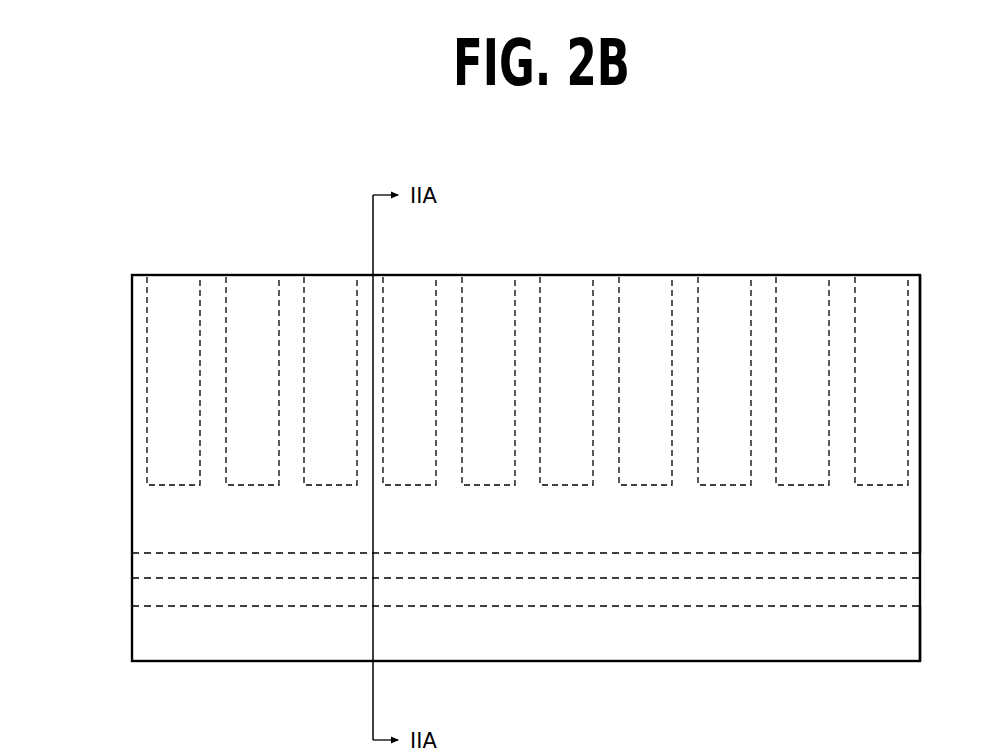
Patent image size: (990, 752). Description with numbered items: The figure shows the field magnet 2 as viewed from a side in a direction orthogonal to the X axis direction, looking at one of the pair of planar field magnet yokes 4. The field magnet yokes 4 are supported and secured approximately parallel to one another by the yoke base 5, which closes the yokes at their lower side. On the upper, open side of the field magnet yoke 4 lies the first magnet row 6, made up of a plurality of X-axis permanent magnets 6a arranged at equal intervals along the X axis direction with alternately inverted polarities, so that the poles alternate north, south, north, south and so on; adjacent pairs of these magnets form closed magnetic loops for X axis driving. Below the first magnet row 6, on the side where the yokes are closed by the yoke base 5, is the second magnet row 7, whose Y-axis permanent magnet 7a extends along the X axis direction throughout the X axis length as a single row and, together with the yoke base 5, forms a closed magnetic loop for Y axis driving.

The field magnet 2 is at (132, 246).
The field magnet yoke 4 is at (911, 516).
The yoke base 5 is at (911, 635).
The first magnet row 6 is at (882, 273).
The X-axis permanent magnet 6a is at (887, 472).
The second magnet row 7 is at (134, 540).
The Y-axis permanent magnet 7a is at (457, 556).